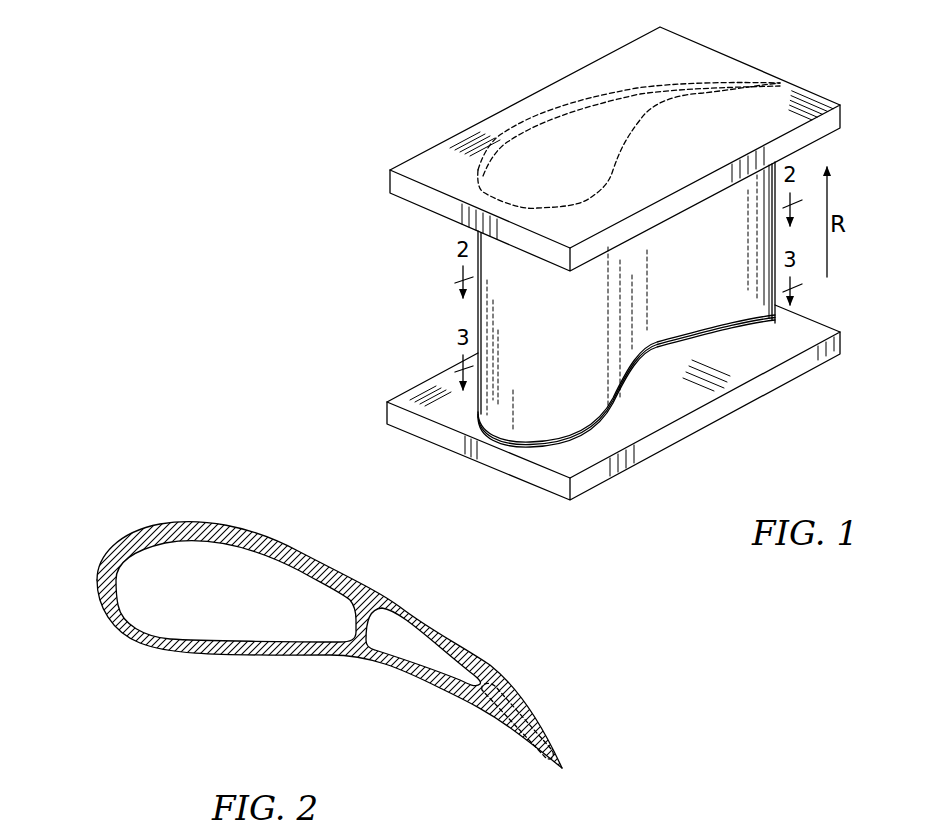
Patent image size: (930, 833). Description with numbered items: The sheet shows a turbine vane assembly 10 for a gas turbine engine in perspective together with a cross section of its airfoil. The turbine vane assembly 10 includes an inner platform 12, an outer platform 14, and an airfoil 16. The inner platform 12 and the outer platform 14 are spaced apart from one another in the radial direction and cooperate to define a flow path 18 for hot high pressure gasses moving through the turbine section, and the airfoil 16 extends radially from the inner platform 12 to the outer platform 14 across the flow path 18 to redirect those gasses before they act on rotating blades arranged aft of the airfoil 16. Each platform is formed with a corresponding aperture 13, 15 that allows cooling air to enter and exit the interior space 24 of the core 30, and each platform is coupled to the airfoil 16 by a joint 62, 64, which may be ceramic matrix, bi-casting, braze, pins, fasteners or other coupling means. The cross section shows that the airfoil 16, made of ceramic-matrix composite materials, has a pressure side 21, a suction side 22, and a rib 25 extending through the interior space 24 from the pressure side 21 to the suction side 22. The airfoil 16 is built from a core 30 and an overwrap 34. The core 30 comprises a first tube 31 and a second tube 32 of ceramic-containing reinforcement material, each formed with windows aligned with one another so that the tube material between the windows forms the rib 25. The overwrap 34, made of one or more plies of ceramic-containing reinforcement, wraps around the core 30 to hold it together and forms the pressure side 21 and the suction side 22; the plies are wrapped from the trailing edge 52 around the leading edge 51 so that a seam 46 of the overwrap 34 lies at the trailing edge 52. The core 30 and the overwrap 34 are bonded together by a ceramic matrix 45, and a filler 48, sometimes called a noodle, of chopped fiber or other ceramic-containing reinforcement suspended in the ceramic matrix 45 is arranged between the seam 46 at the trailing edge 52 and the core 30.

In FIG. 1, the turbine vane assembly 10 is at (424, 138).
In FIG. 1, the inner platform 12 is at (566, 483).
In FIG. 1, the aperture 13 is at (772, 335).
In FIG. 1, the outer platform 14 is at (410, 198).
In FIG. 1, the aperture 15 is at (702, 76).
In FIG. 1, the airfoil 16 is at (588, 275).
In FIG. 2, the airfoil 16 is at (325, 647).
In FIG. 1, the flow path 18 is at (434, 290).
In FIG. 1, the pressure side 21 is at (633, 347).
In FIG. 2, the pressure side 21 is at (362, 661).
In FIG. 1, the suction side 22 is at (484, 262).
In FIG. 2, the suction side 22 is at (355, 583).
In FIG. 2, the interior space 24 is at (236, 578).
In FIG. 2, the ribs 25 is at (346, 622).
In FIG. 1, the core 30 is at (598, 382).
In FIG. 2, the core 30 is at (187, 659).
In FIG. 2, the first tube 31 is at (218, 631).
In FIG. 2, the second tube 32 is at (402, 649).
In FIG. 1, the overwrap 34 is at (527, 407).
In FIG. 2, the overwrap 34 is at (140, 651).
In FIG. 2, the ceramic matrix 45 is at (429, 610).
In FIG. 2, the seam 46 is at (560, 775).
In FIG. 2, the filler 48 is at (505, 692).
In FIG. 1, the leading edge 51 is at (480, 414).
In FIG. 2, the leading edge 51 is at (97, 580).
In FIG. 1, the trailing edge 52 is at (773, 305).
In FIG. 2, the trailing edge 52 is at (562, 768).
In FIG. 1, the joint 62 is at (706, 346).
In FIG. 1, the joint 64 is at (680, 232).